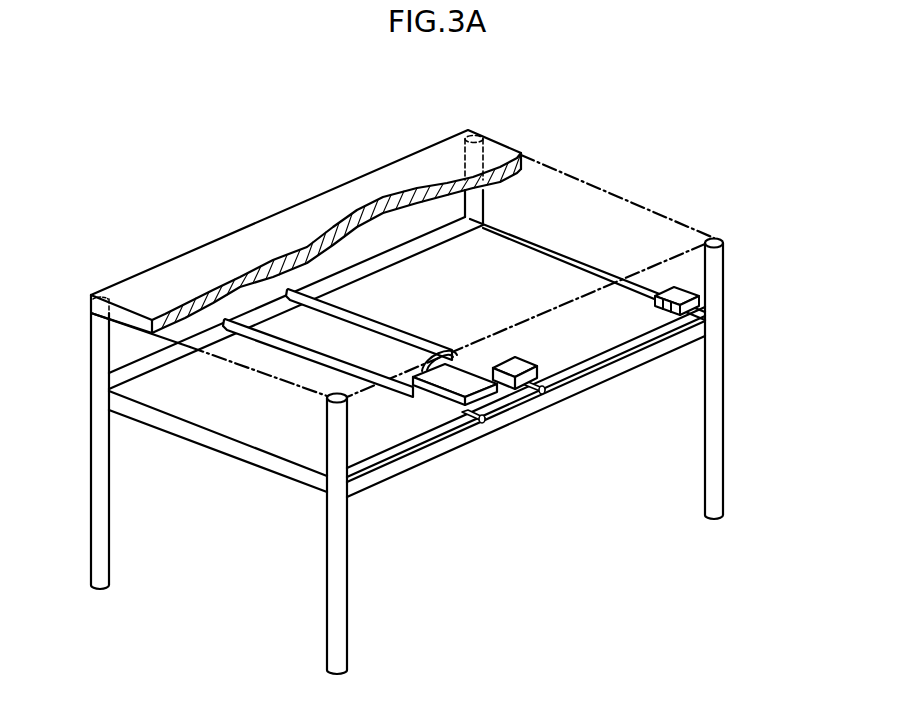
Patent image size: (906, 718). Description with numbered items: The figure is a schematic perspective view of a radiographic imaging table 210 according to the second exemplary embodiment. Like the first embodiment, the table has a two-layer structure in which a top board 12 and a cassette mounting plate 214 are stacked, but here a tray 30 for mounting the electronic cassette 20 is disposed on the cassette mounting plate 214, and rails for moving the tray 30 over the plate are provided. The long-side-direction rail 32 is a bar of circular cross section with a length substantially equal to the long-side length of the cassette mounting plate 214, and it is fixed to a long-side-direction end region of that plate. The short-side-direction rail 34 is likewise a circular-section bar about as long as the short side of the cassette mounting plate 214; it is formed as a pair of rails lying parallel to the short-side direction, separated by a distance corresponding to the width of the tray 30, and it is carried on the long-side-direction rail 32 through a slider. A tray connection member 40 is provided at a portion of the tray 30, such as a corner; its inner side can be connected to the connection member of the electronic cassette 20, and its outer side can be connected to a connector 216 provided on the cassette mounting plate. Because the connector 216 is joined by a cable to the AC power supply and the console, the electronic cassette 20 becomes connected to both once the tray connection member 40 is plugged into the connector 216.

The radiographic imaging table 210 is at (716, 130).
The top board 12 is at (495, 155).
The long-side-direction rail 32 is at (448, 245).
The short-side-direction rail 34 is at (367, 323).
The electronic cassette 20 is at (473, 385).
The tray 30 is at (437, 405).
The tray connection member 40 is at (515, 363).
The cassette mounting plate 214 is at (216, 447).
The connector 216 is at (699, 298).